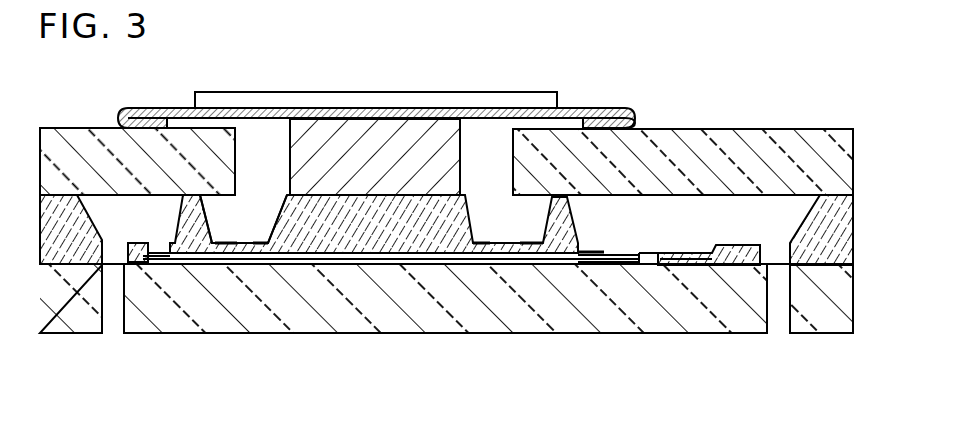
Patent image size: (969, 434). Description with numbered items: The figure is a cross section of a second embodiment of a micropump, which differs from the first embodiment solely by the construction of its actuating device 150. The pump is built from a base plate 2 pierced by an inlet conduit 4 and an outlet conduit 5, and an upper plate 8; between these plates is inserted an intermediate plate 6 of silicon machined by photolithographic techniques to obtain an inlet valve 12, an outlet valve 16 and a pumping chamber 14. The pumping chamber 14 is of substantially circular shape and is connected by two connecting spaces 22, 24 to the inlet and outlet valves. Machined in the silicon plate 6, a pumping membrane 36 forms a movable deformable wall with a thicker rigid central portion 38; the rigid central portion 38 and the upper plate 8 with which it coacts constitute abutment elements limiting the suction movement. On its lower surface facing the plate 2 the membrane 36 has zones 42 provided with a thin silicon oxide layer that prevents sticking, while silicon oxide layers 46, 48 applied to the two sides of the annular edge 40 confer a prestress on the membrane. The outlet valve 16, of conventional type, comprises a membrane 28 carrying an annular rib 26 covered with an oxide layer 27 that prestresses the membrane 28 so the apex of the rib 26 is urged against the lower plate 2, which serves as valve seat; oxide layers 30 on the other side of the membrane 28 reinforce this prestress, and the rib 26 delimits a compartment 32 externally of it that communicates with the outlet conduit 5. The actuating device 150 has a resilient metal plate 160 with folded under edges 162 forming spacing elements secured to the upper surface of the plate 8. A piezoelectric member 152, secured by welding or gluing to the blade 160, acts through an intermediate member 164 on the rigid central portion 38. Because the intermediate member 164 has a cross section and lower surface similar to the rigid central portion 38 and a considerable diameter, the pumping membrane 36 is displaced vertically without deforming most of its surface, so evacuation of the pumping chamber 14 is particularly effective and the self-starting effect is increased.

The base plate 2 is at (453, 300).
The inlet conduit 4 is at (113, 308).
The outlet conduit 5 is at (780, 323).
The intermediate plate 6 is at (823, 233).
The upper plate 8 is at (802, 160).
The inlet valve 12 is at (172, 265).
The pumping chamber 14 is at (338, 267).
The outlet valve 16 is at (648, 273).
The connecting space 22 is at (182, 265).
The connecting space 24 is at (612, 265).
The annular rib 26 is at (663, 253).
The oxide layer 27 is at (660, 270).
The membrane 28 is at (622, 253).
The oxide layers 30 is at (593, 251).
The compartment 32 is at (678, 217).
The pumping membrane 36 is at (477, 260).
The rigid central portion 38 is at (420, 227).
The annular edge 40 is at (532, 260).
The zones 42 is at (300, 265).
The silicon oxide layer 46 is at (263, 239).
The silicon oxide layer 48 is at (233, 265).
The actuating device 150 is at (354, 88).
The piezoelectric member 152 is at (475, 100).
The resilient metal plate 160 is at (583, 118).
The folded under edges 162 is at (603, 122).
The intermediate member 164 is at (316, 145).